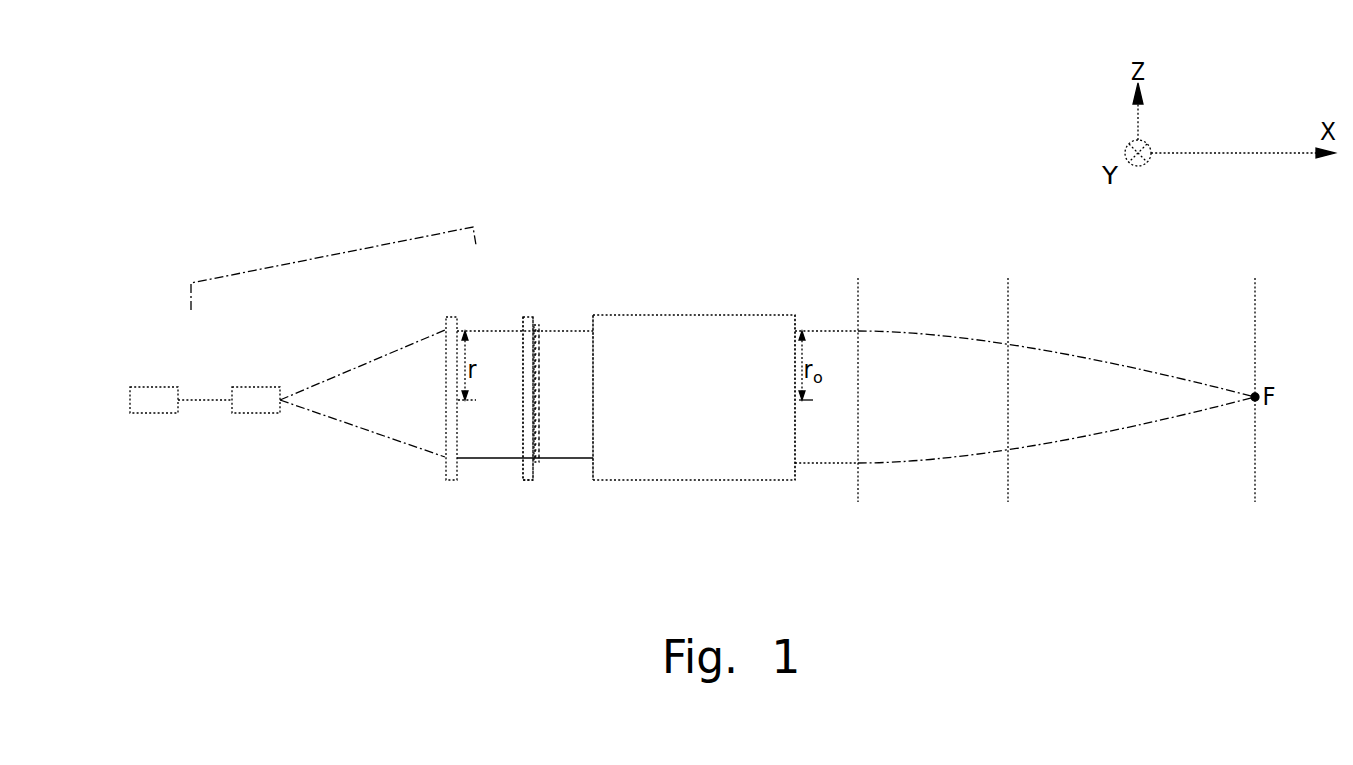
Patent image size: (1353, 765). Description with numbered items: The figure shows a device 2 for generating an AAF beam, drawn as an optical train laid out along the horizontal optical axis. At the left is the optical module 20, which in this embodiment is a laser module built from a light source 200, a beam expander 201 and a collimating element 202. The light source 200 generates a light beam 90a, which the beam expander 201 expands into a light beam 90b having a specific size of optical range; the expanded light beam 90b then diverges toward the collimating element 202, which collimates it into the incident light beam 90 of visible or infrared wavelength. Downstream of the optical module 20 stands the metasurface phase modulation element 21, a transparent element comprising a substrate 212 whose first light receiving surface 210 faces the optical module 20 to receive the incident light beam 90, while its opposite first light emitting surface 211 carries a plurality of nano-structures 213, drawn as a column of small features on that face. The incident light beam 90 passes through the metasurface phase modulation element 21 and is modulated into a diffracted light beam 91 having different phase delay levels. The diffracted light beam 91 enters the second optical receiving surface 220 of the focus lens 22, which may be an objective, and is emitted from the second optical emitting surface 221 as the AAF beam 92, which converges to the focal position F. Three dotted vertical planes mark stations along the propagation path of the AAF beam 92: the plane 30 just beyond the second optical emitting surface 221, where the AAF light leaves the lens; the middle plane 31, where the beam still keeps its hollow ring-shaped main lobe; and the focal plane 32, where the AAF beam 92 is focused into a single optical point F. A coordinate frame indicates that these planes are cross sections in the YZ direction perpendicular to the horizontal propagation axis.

The device 2 is at (247, 172).
The optical module 20 is at (293, 317).
The light source 200 is at (152, 387).
The beam expander 201 is at (252, 390).
The collimating element 202 is at (448, 317).
The metasurface phase modulation element 21 is at (548, 302).
The first light receiving surface 210 is at (523, 461).
The first light emitting surface 211 is at (535, 473).
The substrate 212 is at (525, 483).
The nano-structures 213 is at (560, 368).
The focus lens 22 is at (680, 322).
The second optical receiving surface 220 is at (593, 473).
The second optical emitting surface 221 is at (797, 322).
The plane 30 is at (857, 493).
The middle plane 31 is at (1007, 493).
The focal plane 32 is at (1255, 493).
The light beam 90a is at (198, 402).
The light beam 90b is at (378, 412).
The incident light beam 90 is at (505, 413).
The diffracted light beam 91 is at (582, 412).
The AAF beam 92 is at (948, 402).